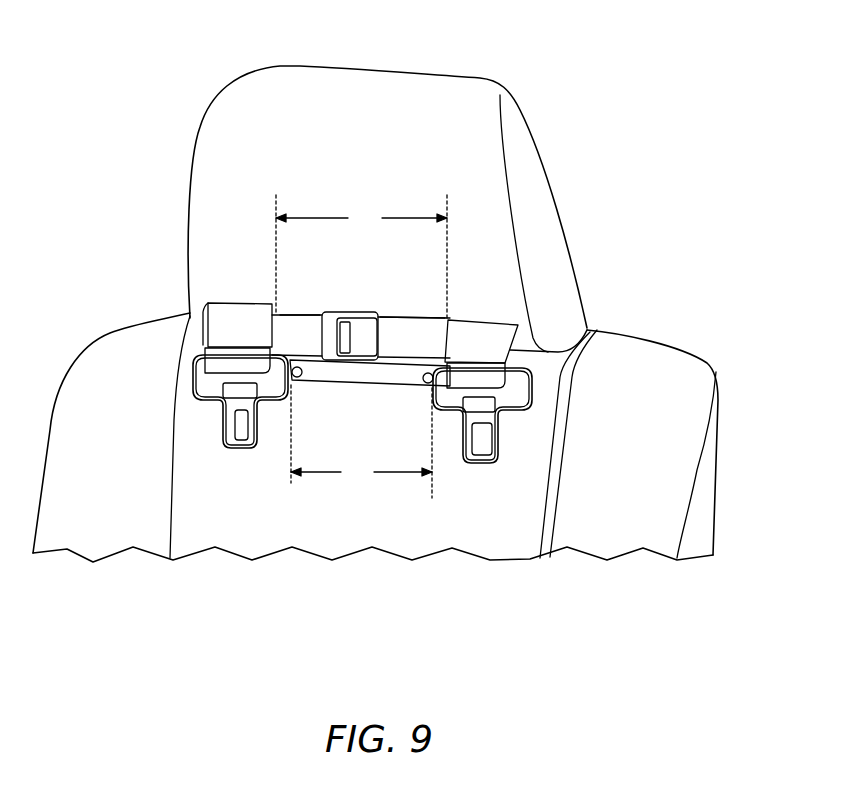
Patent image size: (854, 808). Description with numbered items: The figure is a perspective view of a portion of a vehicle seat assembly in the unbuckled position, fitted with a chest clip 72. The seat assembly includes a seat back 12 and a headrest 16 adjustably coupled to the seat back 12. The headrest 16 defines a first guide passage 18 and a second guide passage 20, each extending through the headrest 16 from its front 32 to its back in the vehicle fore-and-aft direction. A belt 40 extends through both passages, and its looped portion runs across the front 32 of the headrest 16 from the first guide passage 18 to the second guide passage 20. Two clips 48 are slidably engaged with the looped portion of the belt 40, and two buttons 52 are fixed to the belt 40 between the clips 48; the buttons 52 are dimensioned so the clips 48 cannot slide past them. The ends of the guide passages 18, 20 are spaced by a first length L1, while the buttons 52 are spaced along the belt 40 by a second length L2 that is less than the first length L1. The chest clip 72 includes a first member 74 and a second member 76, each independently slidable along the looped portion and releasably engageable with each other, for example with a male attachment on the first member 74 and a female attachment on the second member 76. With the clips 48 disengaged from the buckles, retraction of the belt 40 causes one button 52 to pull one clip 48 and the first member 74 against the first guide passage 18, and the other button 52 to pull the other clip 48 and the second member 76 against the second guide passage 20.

The seat back 12 is at (665, 335).
The headrest 16 is at (445, 74).
The first guide passage 18 is at (205, 310).
The second guide passage 20 is at (520, 320).
The front 32 is at (230, 150).
The belt 40 is at (237, 305).
The clips 48 is at (235, 450).
The buttons 52 is at (420, 380).
The chest clip 72 is at (254, 283).
The first member 74 is at (296, 315).
The second member 76 is at (405, 318).
The first length L1 is at (361, 256).
The second length L2 is at (361, 441).